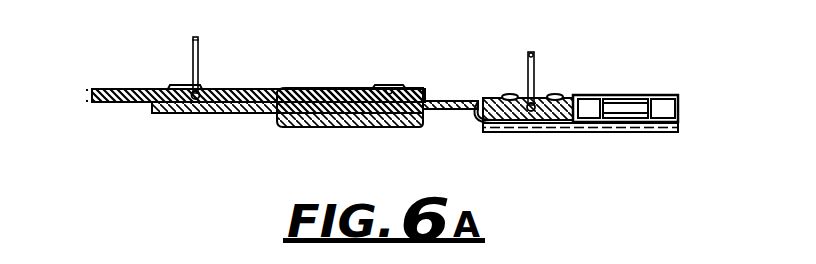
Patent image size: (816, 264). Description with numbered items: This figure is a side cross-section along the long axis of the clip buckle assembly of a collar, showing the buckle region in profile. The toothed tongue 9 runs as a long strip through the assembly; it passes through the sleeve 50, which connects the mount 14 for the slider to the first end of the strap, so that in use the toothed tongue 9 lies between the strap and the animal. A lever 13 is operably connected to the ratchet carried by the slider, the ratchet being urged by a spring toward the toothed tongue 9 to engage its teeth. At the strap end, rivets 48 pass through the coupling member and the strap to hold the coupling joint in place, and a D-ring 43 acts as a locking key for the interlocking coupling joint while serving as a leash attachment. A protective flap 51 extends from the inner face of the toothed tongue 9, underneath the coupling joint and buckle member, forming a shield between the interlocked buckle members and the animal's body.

The toothed tongue 9 is at (282, 72).
The lever 13 is at (407, 66).
The mount 14 is at (351, 160).
The D-ring 43 is at (169, 56).
The rivet 48 is at (214, 63).
The sleeve 50 is at (350, 70).
The protective flap 51 is at (576, 123).